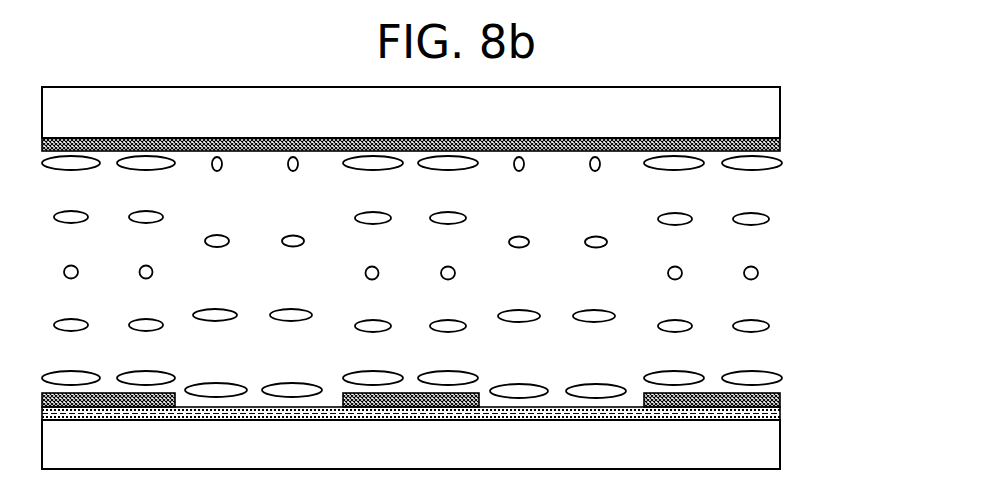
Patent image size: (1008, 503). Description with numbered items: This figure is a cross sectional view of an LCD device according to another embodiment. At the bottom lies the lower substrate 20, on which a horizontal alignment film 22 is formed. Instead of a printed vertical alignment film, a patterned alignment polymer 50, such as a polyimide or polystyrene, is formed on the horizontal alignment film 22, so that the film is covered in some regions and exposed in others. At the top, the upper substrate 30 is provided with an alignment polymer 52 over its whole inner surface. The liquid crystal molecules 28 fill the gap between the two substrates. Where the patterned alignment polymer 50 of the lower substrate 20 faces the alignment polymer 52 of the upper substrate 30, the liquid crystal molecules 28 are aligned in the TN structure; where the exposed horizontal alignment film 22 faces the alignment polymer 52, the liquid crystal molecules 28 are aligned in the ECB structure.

The upper substrate 30 is at (780, 112).
The alignment polymer 52 is at (781, 142).
The liquid crystal molecules 28 is at (758, 272).
The alignment polymer 50 is at (781, 400).
The horizontal alignment film 22 is at (781, 413).
The lower substrate 20 is at (775, 443).